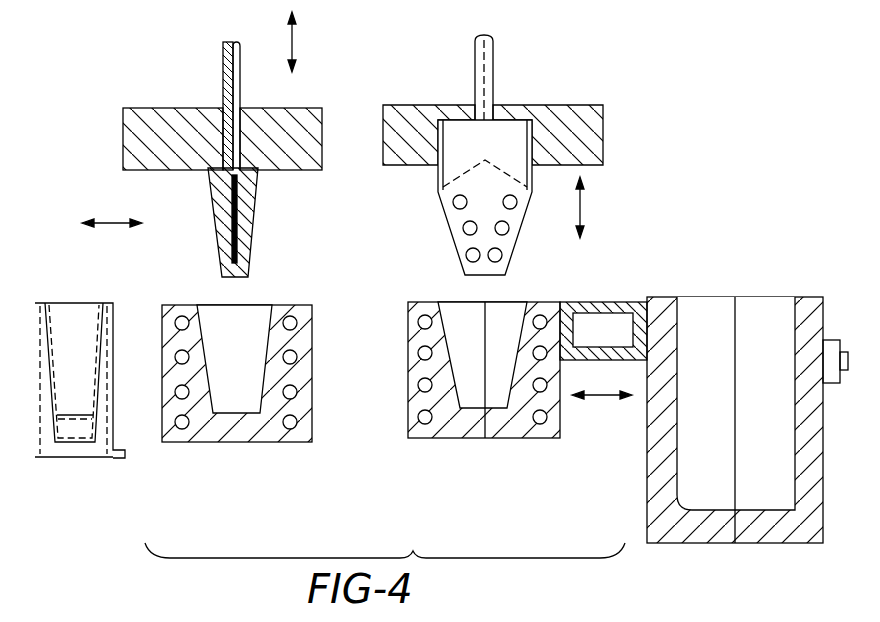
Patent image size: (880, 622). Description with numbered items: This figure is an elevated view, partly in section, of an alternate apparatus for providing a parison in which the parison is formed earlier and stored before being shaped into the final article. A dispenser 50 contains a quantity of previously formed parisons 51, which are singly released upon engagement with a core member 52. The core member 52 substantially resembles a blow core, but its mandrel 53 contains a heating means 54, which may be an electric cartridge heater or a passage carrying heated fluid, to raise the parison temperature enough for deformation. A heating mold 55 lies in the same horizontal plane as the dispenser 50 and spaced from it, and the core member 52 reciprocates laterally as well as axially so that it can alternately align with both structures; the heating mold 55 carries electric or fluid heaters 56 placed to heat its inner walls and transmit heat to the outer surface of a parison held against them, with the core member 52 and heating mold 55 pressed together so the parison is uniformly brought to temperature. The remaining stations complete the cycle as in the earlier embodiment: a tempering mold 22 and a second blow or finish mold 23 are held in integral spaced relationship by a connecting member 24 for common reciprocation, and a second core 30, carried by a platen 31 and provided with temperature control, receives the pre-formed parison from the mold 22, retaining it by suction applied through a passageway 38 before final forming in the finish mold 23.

The mold 22 is at (518, 427).
The second blow mold 23 is at (682, 533).
The connecting member 24 is at (612, 301).
The second core 30 is at (507, 250).
The platen 31 is at (590, 146).
The passageway 38 is at (486, 80).
The dispenser 50 is at (117, 456).
The previously formed parisons 51 is at (55, 320).
The core member 52 is at (256, 253).
The mandrel 53 is at (250, 200).
The heating means 54 is at (235, 239).
The heating mold 55 is at (307, 427).
The heaters 56 is at (313, 340).